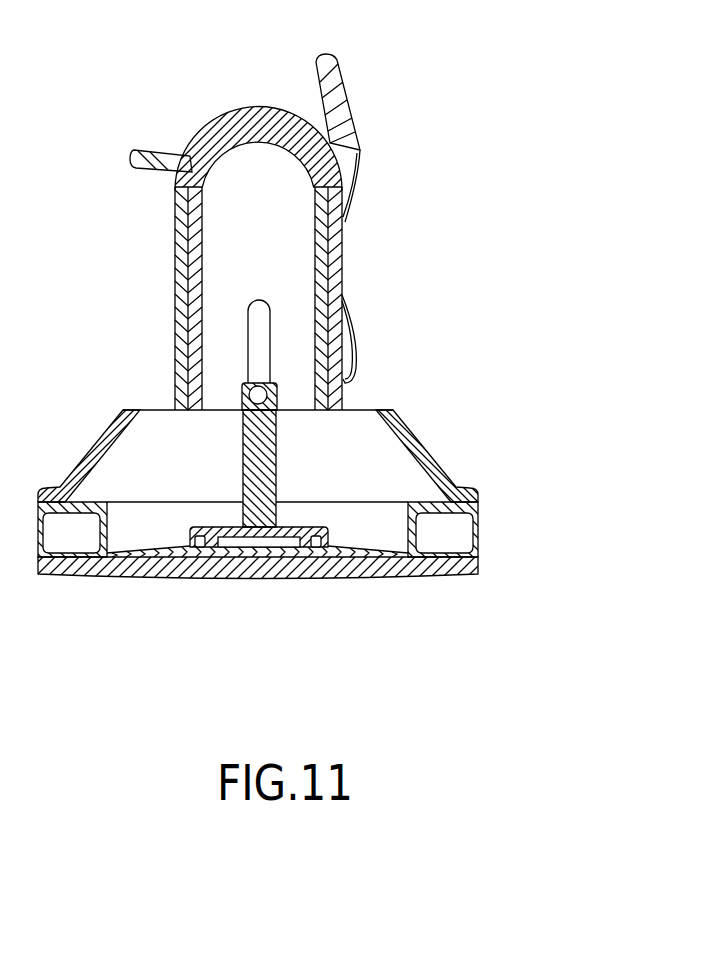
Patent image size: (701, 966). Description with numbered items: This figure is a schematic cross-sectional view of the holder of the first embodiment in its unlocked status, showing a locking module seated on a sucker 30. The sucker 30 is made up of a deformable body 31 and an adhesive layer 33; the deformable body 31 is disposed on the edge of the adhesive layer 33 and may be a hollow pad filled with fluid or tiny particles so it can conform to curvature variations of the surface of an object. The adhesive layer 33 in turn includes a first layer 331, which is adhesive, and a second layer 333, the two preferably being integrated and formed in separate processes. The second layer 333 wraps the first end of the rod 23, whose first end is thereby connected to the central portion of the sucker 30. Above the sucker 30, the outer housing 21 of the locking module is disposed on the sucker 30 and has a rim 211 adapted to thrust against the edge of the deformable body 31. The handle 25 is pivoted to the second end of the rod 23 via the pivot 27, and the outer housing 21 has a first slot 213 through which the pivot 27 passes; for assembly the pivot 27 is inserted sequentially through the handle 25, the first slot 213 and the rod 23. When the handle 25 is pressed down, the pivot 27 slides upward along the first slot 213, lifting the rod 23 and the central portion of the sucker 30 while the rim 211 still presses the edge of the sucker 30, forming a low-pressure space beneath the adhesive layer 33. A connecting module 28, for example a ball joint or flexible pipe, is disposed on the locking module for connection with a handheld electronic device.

The outer housing 21 is at (258, 267).
The rim 211 is at (396, 464).
The first slot 213 is at (257, 330).
The rod 23 is at (252, 512).
The handle 25 is at (350, 172).
The pivot 27 is at (260, 402).
The connecting module 28 is at (142, 158).
The sucker 30 is at (324, 536).
The deformable body 31 is at (477, 540).
The adhesive layer 33 is at (258, 620).
The first layer 331 is at (350, 572).
The second layer 333 is at (378, 554).